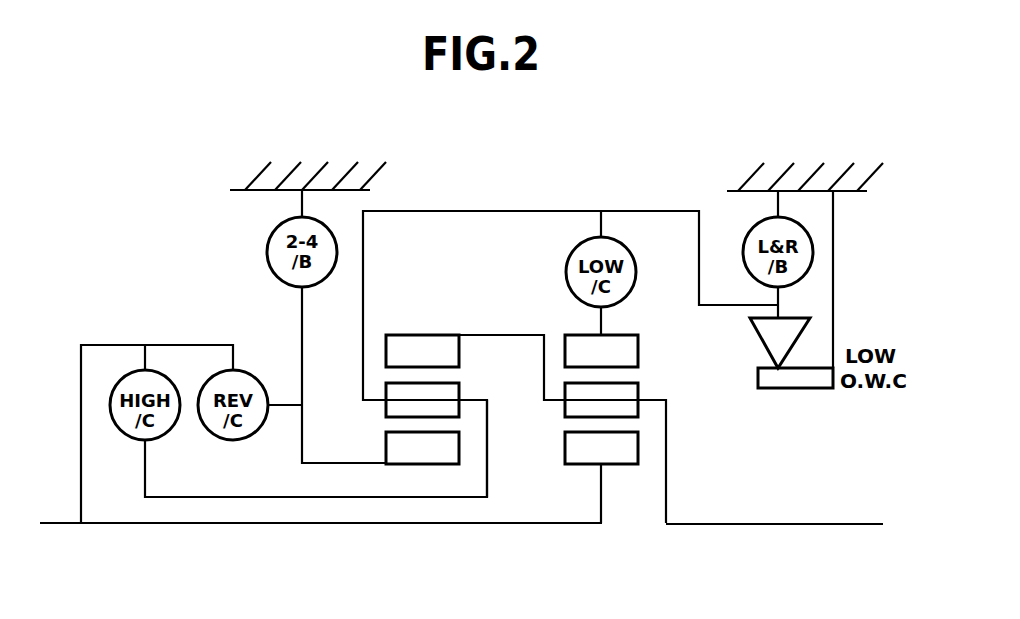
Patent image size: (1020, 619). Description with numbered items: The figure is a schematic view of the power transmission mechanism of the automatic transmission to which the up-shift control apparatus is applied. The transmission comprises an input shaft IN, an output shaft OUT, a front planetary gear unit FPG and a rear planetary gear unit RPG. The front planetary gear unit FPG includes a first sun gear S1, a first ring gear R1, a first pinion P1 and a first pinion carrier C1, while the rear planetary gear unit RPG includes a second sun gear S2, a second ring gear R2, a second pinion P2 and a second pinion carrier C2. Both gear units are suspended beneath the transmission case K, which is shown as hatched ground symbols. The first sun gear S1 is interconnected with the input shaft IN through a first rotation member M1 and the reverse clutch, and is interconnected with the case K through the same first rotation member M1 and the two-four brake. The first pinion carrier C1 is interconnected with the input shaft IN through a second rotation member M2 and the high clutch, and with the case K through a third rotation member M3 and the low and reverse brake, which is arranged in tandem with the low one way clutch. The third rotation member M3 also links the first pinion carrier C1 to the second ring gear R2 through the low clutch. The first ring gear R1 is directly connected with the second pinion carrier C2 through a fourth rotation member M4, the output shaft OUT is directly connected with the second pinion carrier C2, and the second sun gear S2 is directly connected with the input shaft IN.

The case K is at (350, 190).
The first rotation member M1 is at (344, 375).
The second rotation member M2 is at (316, 448).
The third rotation member M3 is at (570, 305).
The fourth rotation member M4 is at (512, 354).
The first ring gear R1 is at (422, 351).
The first pinion P1 is at (459, 383).
The first pinion carrier C1 is at (478, 400).
The first sun gear S1 is at (422, 448).
The second ring gear R2 is at (601, 351).
The second pinion P2 is at (638, 383).
The second pinion carrier C2 is at (657, 400).
The second sun gear S2 is at (601, 477).
The input shaft IN is at (321, 511).
The output shaft OUT is at (774, 513).
The front planetary gear unit FPG is at (422, 529).
The rear planetary gear unit RPG is at (601, 529).